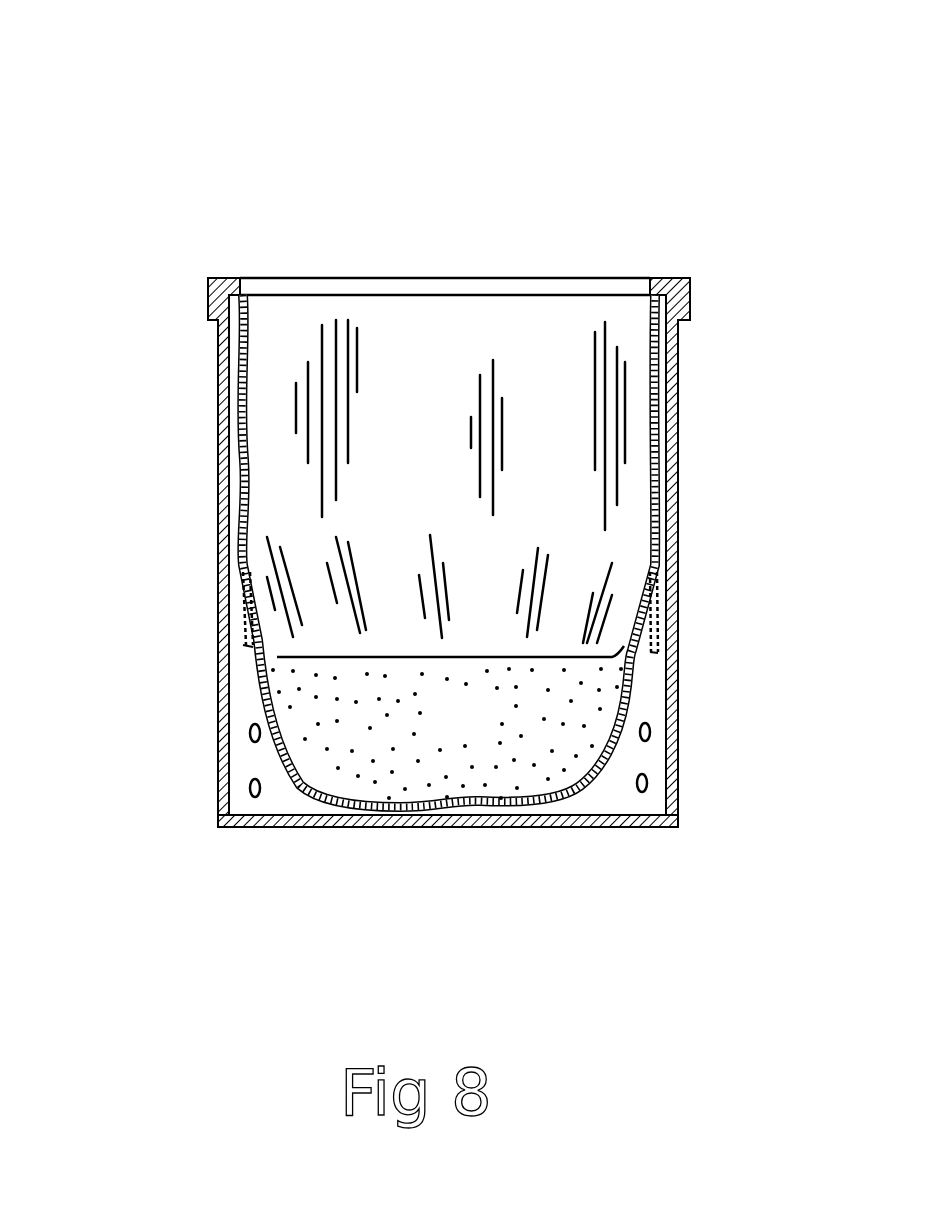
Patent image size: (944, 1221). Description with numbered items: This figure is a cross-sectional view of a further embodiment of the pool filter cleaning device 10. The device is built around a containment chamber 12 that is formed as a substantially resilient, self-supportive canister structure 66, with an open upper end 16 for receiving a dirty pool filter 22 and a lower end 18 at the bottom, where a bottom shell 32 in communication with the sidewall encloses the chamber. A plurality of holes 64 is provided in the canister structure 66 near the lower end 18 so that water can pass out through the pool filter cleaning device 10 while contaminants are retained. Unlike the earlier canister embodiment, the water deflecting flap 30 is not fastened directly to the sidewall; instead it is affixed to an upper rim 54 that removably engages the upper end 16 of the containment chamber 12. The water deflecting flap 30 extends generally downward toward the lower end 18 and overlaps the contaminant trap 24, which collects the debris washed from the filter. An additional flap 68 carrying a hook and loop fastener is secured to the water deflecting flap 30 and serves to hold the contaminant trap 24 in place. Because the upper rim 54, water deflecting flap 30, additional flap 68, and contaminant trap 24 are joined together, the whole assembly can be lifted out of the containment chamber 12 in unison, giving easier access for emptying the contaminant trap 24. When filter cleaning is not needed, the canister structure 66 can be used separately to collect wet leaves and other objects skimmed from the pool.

The pool filter cleaning device 10 is at (697, 105).
The containment chamber 12 is at (218, 393).
The upper end 16 is at (347, 233).
The lower end 18 is at (306, 922).
The dirty pool filter 22 is at (678, 630).
The contaminant trap 24 is at (490, 738).
The water deflecting flap 30 is at (566, 539).
The bottom shell 32 is at (405, 830).
The upper rim 54 is at (682, 278).
The holes 64 is at (250, 733).
The canister structure 66 is at (218, 503).
The additional flap 68 is at (240, 625).